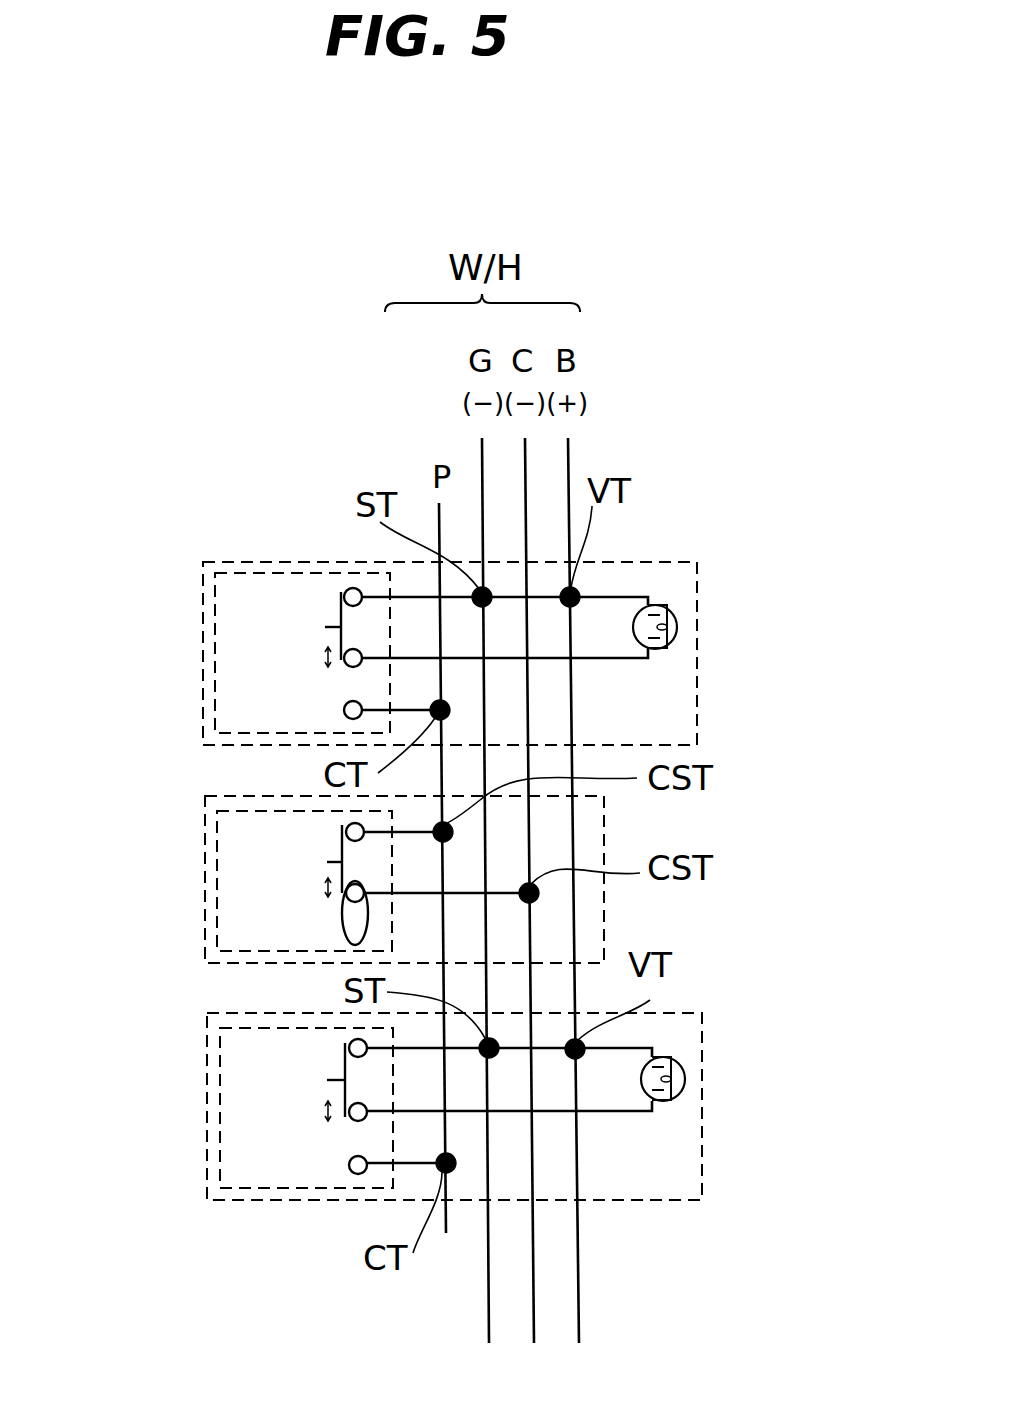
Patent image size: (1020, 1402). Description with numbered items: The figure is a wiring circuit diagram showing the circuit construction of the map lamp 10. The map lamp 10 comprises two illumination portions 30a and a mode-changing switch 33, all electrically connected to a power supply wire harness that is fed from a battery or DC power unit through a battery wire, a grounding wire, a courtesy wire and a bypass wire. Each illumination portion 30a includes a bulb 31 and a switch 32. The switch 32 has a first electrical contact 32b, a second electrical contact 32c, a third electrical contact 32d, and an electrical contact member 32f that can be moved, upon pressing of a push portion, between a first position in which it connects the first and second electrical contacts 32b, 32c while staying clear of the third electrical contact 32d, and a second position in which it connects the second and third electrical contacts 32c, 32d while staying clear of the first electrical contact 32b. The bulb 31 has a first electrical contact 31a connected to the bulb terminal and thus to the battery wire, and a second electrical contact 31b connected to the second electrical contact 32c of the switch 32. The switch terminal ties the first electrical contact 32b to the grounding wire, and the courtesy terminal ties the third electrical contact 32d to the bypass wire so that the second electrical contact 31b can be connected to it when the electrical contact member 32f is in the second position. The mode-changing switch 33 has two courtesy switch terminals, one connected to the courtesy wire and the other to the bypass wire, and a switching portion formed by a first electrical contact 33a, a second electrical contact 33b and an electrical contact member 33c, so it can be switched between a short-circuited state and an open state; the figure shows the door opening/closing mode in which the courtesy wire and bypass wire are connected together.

The map lamp 10 is at (292, 452).
The illumination portion 30a is at (203, 618).
The bulb 31 is at (680, 625).
The first electrical contact 31a is at (652, 602).
The second electrical contact 31b is at (652, 650).
The switch 32 is at (312, 596).
The first electrical contact 32b is at (350, 589).
The second electrical contact 32c is at (348, 668).
The third electrical contact 32d is at (352, 720).
The electrical contact member 32f is at (327, 628).
The mode-changing switch 33 is at (205, 847).
The first electrical contact 33a is at (344, 822).
The second electrical contact 33b is at (346, 927).
The electrical contact member 33c is at (341, 848).